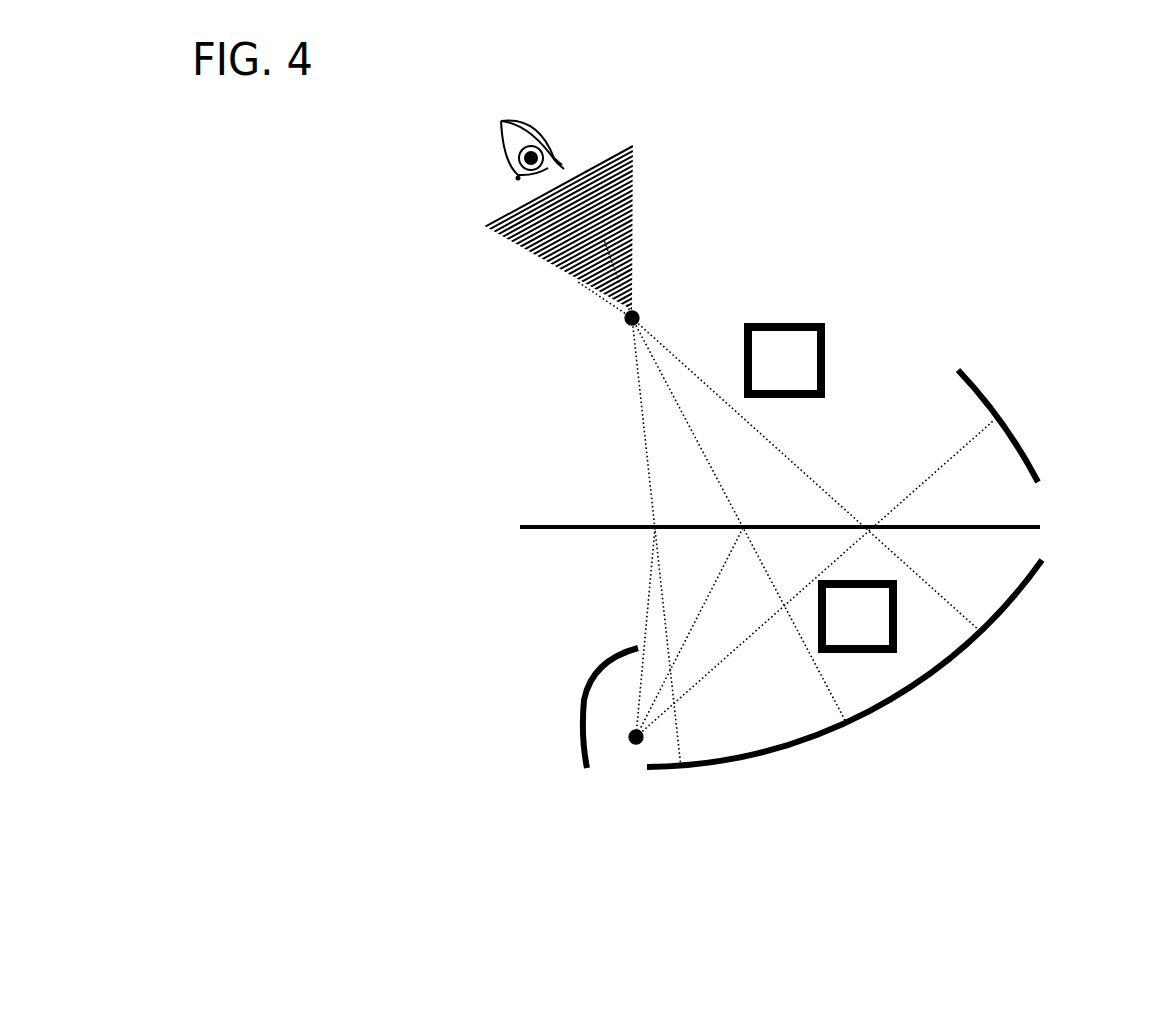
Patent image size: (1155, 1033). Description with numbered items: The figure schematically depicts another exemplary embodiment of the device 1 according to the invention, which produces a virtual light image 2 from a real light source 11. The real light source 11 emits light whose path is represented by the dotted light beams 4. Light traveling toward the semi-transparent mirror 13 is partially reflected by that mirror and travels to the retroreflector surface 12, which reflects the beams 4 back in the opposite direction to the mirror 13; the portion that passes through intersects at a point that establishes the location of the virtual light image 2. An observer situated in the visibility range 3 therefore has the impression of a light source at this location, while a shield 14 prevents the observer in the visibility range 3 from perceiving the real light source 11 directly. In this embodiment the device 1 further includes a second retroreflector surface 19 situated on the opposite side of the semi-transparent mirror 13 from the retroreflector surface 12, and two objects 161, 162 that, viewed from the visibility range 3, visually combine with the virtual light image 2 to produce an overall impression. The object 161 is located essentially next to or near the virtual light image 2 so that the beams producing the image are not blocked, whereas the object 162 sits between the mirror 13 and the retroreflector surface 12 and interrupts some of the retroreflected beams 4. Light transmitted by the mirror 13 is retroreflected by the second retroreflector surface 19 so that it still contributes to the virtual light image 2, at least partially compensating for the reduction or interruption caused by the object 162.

The device 1 is at (401, 362).
The virtual light image 2 is at (614, 322).
The visibility range 3 is at (583, 174).
The light beams 4 is at (768, 459).
The real light source 11 is at (621, 722).
The retroreflector surface 12 is at (1026, 607).
The semi-transparent mirror 13 is at (542, 516).
The shield 14 is at (563, 711).
The second retroreflector surface 19 is at (950, 328).
The object 161 is at (803, 314).
The object 162 is at (887, 663).